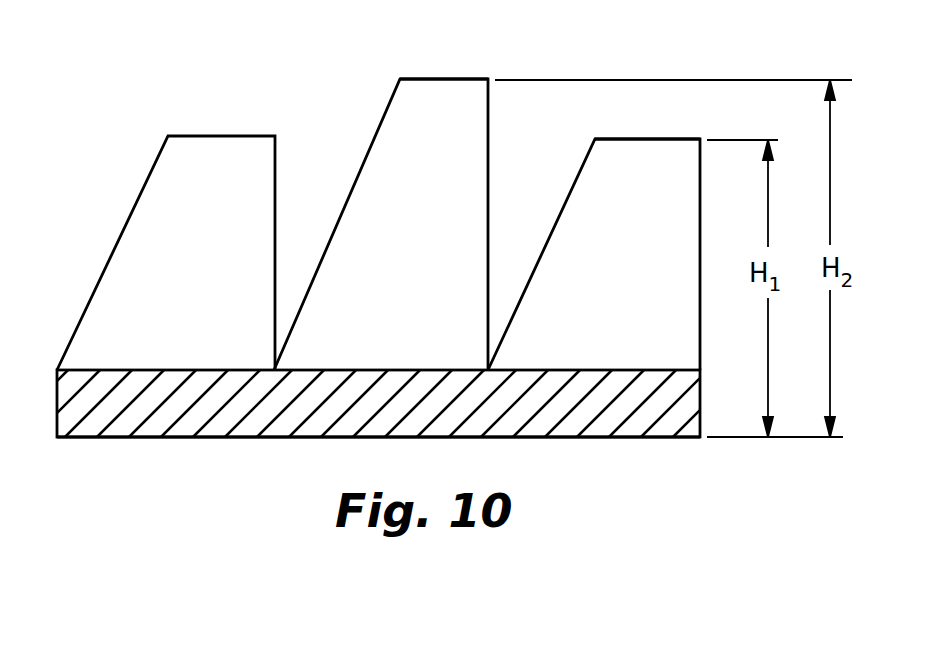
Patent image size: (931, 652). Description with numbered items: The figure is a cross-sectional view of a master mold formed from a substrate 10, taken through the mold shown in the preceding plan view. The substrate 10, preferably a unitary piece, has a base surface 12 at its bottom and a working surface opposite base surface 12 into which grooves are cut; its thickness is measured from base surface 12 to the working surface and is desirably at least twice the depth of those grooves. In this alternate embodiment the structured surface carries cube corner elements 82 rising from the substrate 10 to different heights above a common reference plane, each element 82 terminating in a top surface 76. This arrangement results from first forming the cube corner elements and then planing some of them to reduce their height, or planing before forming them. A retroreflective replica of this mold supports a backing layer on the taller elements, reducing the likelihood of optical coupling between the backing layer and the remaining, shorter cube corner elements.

The top surface of feature 76 is at (440, 79).
The patterned feature 82 is at (390, 258).
The substrate 10 is at (690, 404).
The base surface 12 is at (607, 440).